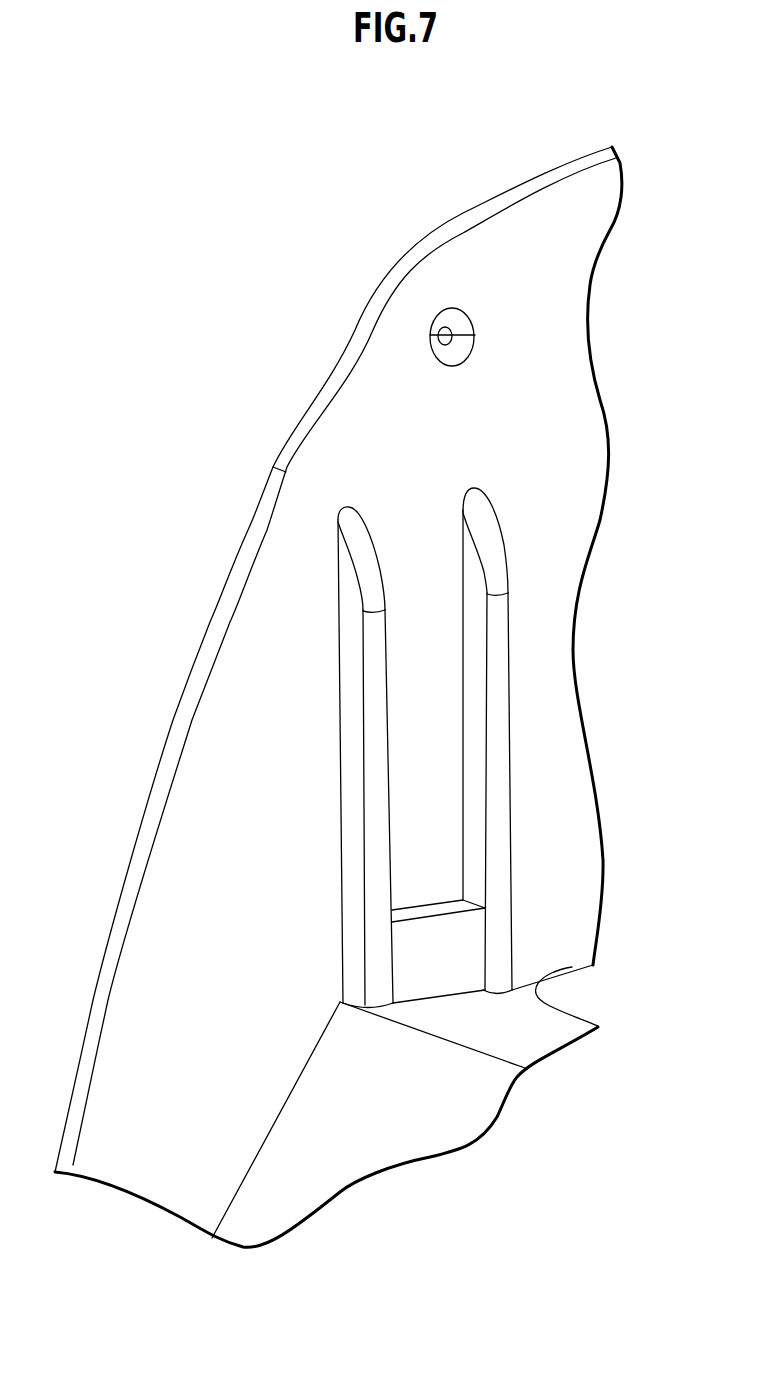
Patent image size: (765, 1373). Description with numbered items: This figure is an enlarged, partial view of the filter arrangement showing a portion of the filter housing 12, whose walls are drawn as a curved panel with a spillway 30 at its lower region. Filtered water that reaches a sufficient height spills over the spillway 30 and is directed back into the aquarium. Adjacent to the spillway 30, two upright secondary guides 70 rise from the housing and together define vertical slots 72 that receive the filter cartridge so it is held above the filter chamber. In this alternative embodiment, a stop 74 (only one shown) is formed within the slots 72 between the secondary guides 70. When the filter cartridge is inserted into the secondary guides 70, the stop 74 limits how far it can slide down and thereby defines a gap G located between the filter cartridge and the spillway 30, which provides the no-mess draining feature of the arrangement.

The filter housing 12 is at (212, 622).
The spillway 30 is at (430, 1123).
The secondary guides 70 is at (492, 543).
The vertical slots 72 is at (420, 647).
The stop 74 is at (428, 917).
The gap G is at (445, 1015).